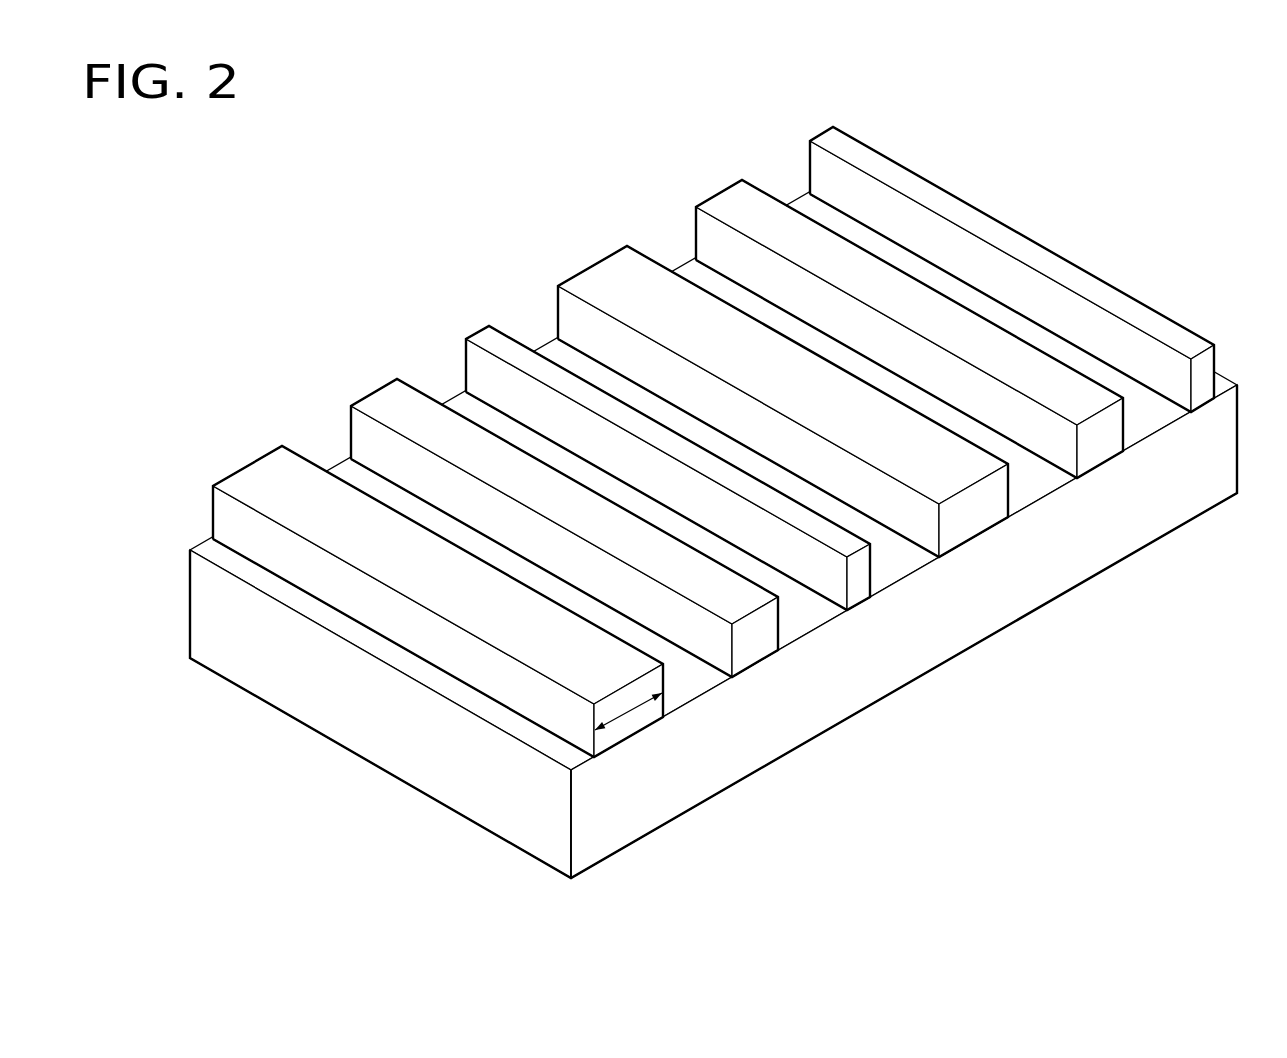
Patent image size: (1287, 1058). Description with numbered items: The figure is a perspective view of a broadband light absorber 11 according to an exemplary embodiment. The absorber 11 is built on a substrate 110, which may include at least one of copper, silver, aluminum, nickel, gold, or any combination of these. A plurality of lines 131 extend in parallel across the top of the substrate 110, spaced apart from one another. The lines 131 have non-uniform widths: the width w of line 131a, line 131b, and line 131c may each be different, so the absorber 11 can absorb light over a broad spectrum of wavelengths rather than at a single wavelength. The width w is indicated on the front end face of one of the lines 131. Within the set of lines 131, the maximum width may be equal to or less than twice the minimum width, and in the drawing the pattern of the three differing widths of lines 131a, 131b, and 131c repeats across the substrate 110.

The broadband light absorber 11 is at (713, 502).
The substrate 110 is at (378, 740).
The lines 131 is at (713, 442).
The line 131a is at (438, 578).
The line 131b is at (382, 405).
The line 131c is at (493, 342).
The width w is at (630, 712).